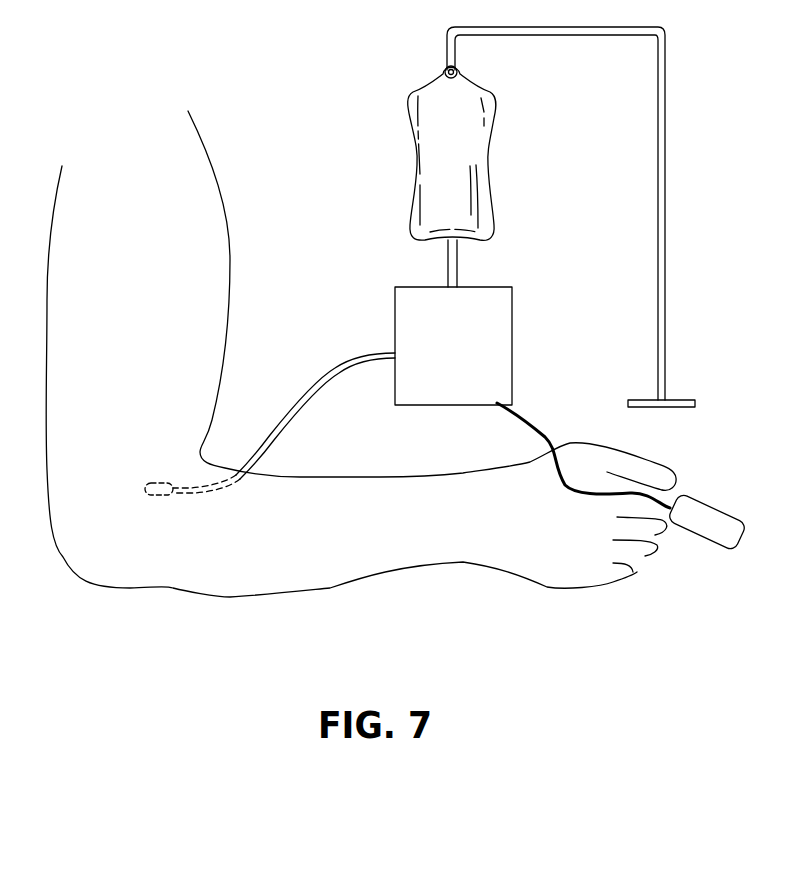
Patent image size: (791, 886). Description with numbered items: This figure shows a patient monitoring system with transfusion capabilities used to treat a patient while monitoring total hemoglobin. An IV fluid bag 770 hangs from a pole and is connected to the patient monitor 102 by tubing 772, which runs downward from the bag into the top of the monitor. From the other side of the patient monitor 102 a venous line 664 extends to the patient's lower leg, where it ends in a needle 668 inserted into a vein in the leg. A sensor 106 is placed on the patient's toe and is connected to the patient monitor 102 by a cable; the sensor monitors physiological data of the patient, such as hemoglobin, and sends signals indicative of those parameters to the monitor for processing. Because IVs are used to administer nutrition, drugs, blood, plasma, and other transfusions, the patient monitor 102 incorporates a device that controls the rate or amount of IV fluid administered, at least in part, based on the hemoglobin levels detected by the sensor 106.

The IV fluid bag 770 is at (493, 142).
The tubing 772 is at (457, 270).
The patient monitor 102 is at (512, 345).
The venous line 664 is at (343, 358).
The needle 668 is at (162, 497).
The sensor 106 is at (708, 548).